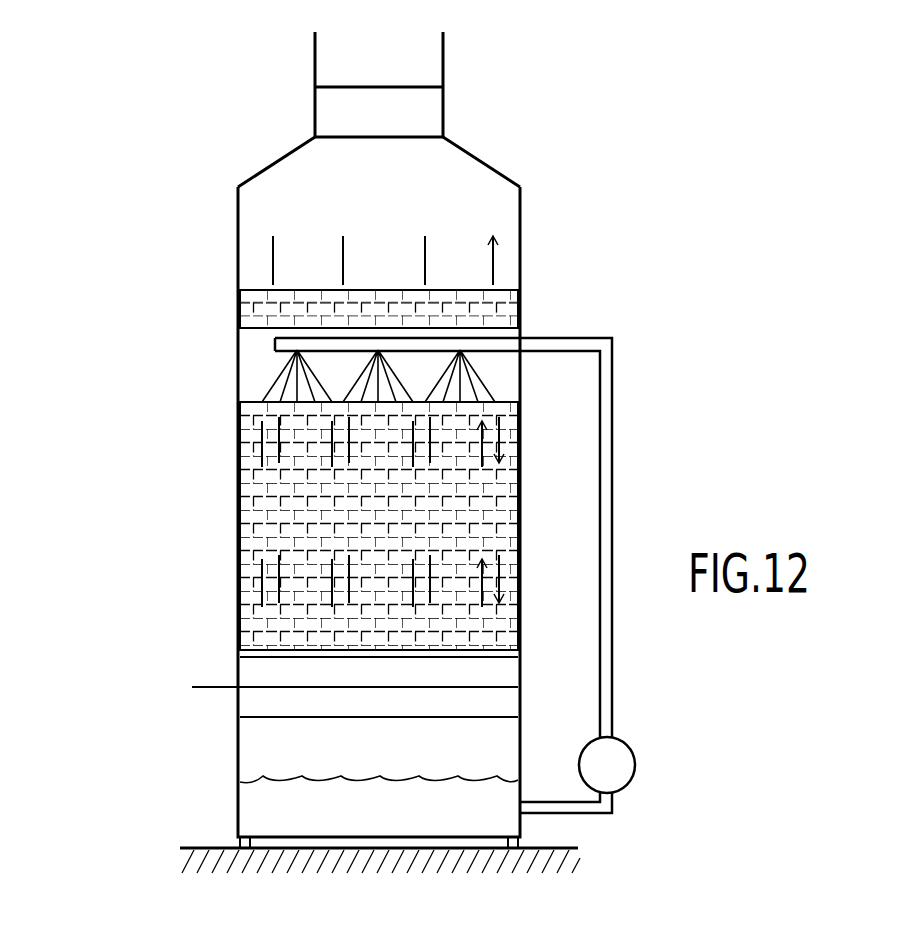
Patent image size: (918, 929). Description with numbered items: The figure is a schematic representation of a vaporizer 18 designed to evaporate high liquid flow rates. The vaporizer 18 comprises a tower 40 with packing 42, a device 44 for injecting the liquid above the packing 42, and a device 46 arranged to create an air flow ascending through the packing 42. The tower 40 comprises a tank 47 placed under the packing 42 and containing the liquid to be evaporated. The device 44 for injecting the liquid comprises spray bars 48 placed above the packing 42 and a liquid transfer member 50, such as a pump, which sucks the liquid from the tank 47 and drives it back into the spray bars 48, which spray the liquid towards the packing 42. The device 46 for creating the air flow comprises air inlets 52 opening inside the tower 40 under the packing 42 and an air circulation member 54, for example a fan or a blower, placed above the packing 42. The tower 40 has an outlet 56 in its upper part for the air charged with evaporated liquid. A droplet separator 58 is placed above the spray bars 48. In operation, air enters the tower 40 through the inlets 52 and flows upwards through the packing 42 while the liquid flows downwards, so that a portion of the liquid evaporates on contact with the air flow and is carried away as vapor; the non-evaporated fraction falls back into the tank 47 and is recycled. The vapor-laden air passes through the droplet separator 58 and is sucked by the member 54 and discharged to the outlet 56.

The vaporizer 18 is at (146, 326).
The tower 40 is at (223, 514).
The packing 42 is at (480, 527).
The device for injecting the liquid 44 is at (637, 727).
The device for creating the air flow 46 is at (462, 114).
The tank 47 is at (238, 803).
The spray bars 48 is at (458, 352).
The liquid transfer member 50 is at (636, 765).
The air inlets 52 is at (237, 650).
The air circulation member 54 is at (327, 115).
The outlet 56 is at (440, 45).
The droplet separator 58 is at (502, 298).